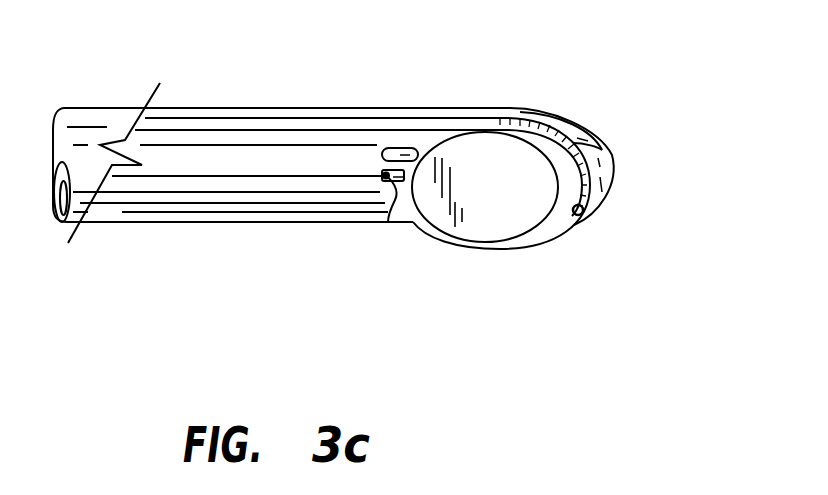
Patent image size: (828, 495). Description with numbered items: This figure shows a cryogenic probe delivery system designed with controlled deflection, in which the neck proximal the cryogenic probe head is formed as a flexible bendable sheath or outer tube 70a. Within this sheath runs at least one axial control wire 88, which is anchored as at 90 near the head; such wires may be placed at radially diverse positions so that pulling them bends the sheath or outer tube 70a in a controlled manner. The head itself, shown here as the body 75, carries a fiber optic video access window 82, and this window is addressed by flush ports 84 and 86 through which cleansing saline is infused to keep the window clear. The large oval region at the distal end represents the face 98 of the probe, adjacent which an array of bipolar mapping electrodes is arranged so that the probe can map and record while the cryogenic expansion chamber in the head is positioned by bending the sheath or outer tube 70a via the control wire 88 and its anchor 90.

The bendable sheath or outer tube 70a is at (243, 212).
The housing 75 is at (460, 147).
The fiber optic video access window 82 is at (613, 165).
The flush port 84 is at (585, 133).
The flush port 86 is at (583, 214).
The axial control wire 88 is at (183, 176).
The anchor 90 is at (385, 175).
The face of the probe 98 is at (525, 196).